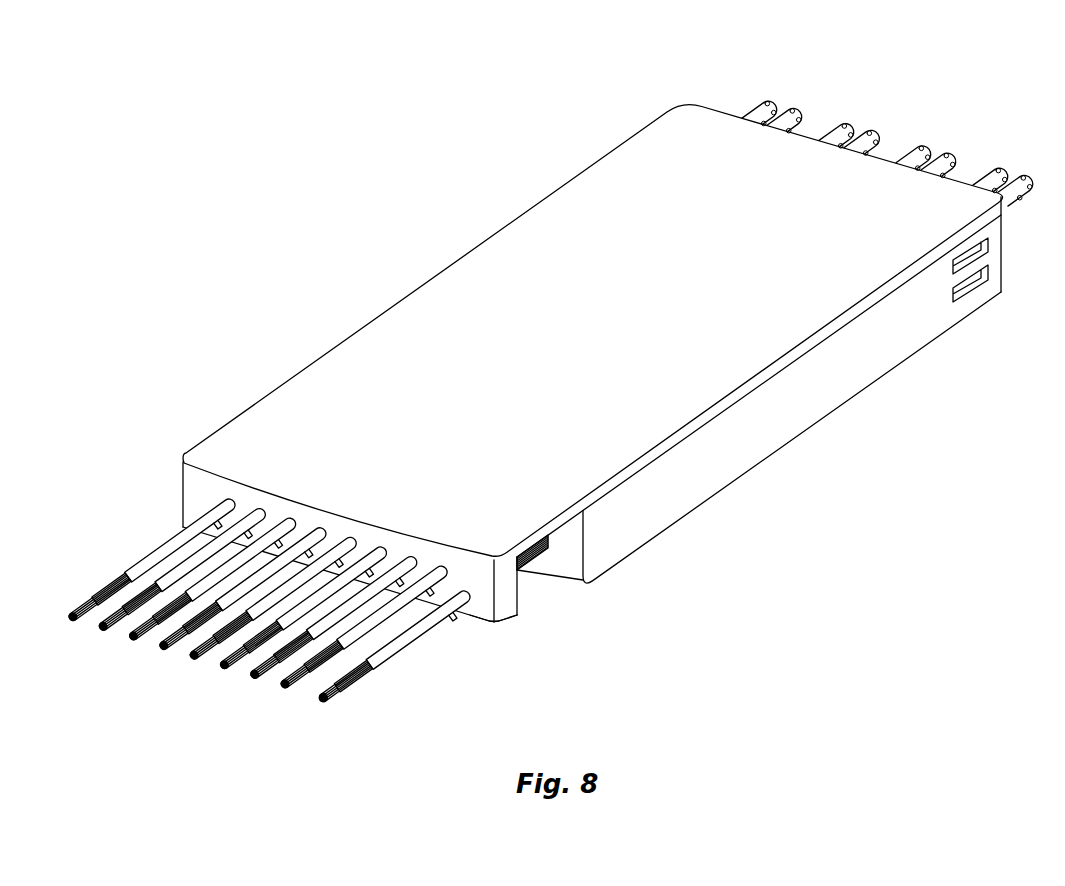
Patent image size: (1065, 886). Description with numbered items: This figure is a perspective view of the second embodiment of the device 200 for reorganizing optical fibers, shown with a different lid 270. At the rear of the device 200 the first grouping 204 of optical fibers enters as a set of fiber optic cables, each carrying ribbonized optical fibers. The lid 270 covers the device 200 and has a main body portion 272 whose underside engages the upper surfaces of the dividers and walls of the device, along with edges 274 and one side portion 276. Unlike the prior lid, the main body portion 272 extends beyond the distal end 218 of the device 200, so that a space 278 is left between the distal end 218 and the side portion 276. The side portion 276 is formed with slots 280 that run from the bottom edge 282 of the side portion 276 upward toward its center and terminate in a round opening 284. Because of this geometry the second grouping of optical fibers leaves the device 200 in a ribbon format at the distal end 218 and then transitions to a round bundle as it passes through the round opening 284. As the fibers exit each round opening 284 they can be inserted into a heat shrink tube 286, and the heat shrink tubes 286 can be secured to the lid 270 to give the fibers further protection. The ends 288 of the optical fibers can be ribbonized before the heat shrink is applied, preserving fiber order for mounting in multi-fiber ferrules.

The device for reorganizing optical fibers 200 is at (866, 376).
The first grouping of optical fibers 204 is at (845, 132).
The distal end 218 is at (584, 584).
The lid 270 is at (593, 294).
The main body portion 272 is at (714, 323).
The edges 274 is at (688, 430).
The side portion 276 is at (510, 622).
The space 278 is at (529, 574).
The slots 280 is at (462, 614).
The bottom edge 282 is at (490, 626).
The round opening 284 is at (413, 558).
The heat shrink tube 286 is at (401, 660).
The ends of the optical fibers 288 is at (353, 690).